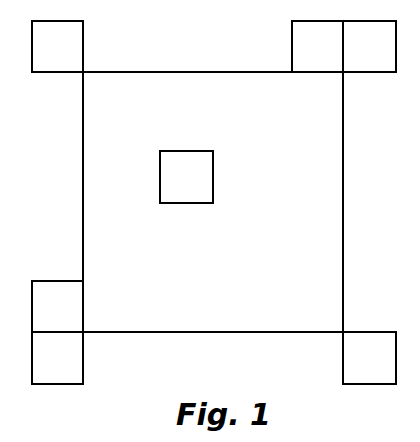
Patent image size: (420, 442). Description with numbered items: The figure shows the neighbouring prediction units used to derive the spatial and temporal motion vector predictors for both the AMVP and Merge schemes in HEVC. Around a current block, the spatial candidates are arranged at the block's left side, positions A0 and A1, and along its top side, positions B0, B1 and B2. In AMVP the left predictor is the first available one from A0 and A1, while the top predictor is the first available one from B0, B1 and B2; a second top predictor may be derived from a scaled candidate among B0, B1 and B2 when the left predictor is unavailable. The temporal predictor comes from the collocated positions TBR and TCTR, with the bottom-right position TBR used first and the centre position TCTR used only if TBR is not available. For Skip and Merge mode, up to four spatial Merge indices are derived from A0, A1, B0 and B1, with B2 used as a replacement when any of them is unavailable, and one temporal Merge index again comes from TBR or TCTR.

The top-left neighbouring PU position B2 is at (57, 46).
The top neighbouring PU position B1 is at (317, 46).
The top-right neighbouring PU position B0 is at (369, 46).
The centre temporal collocated position TCTR is at (186, 177).
The left neighbouring PU position A1 is at (57, 306).
The bottom-left neighbouring PU position A0 is at (57, 358).
The bottom-right temporal collocated position TBR is at (369, 358).